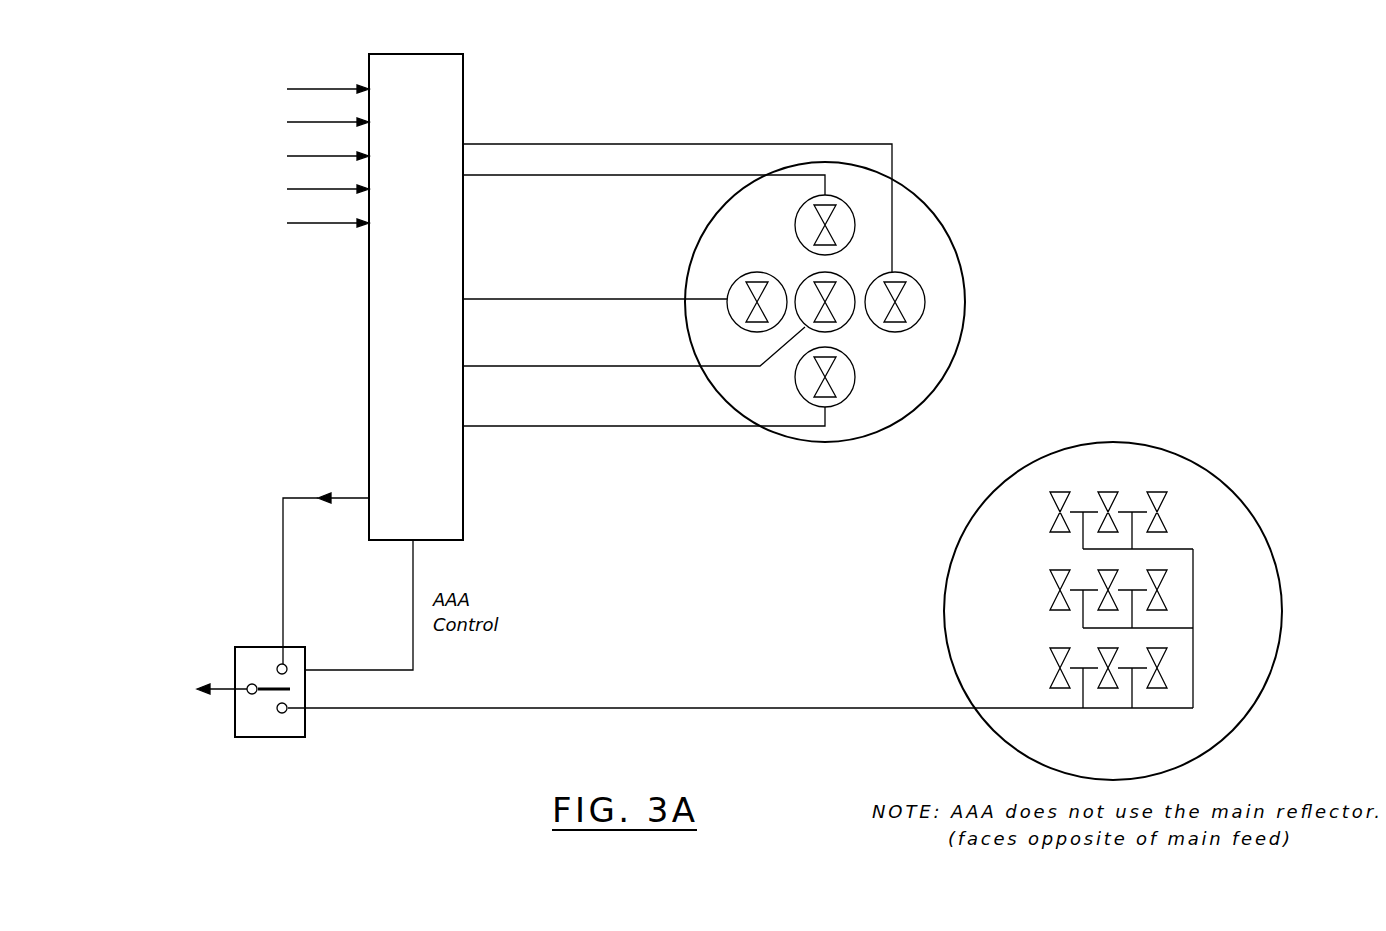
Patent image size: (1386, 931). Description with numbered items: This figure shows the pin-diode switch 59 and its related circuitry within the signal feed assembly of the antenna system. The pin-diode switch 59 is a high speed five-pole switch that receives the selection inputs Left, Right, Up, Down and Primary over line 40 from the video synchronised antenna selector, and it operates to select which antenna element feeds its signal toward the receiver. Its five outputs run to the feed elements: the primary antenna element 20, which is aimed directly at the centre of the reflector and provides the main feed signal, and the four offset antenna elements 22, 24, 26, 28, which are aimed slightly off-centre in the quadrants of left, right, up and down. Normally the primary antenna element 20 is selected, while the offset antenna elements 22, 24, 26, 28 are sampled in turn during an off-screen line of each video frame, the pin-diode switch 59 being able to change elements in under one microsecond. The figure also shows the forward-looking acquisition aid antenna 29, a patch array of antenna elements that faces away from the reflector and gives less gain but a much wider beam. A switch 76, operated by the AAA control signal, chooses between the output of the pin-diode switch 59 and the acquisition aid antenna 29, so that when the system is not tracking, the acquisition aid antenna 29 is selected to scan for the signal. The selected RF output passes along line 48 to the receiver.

The line 40 is at (168, 68).
The pin-diode switch 59 is at (369, 313).
The primary antenna element 20 is at (803, 284).
The offset antenna element 22 is at (737, 285).
The offset antenna element 24 is at (912, 282).
The offset antenna element 26 is at (847, 218).
The offset antenna element 28 is at (848, 377).
The acquisition aid antenna 29 is at (976, 508).
The line 48 is at (225, 688).
The switch 76 is at (268, 740).